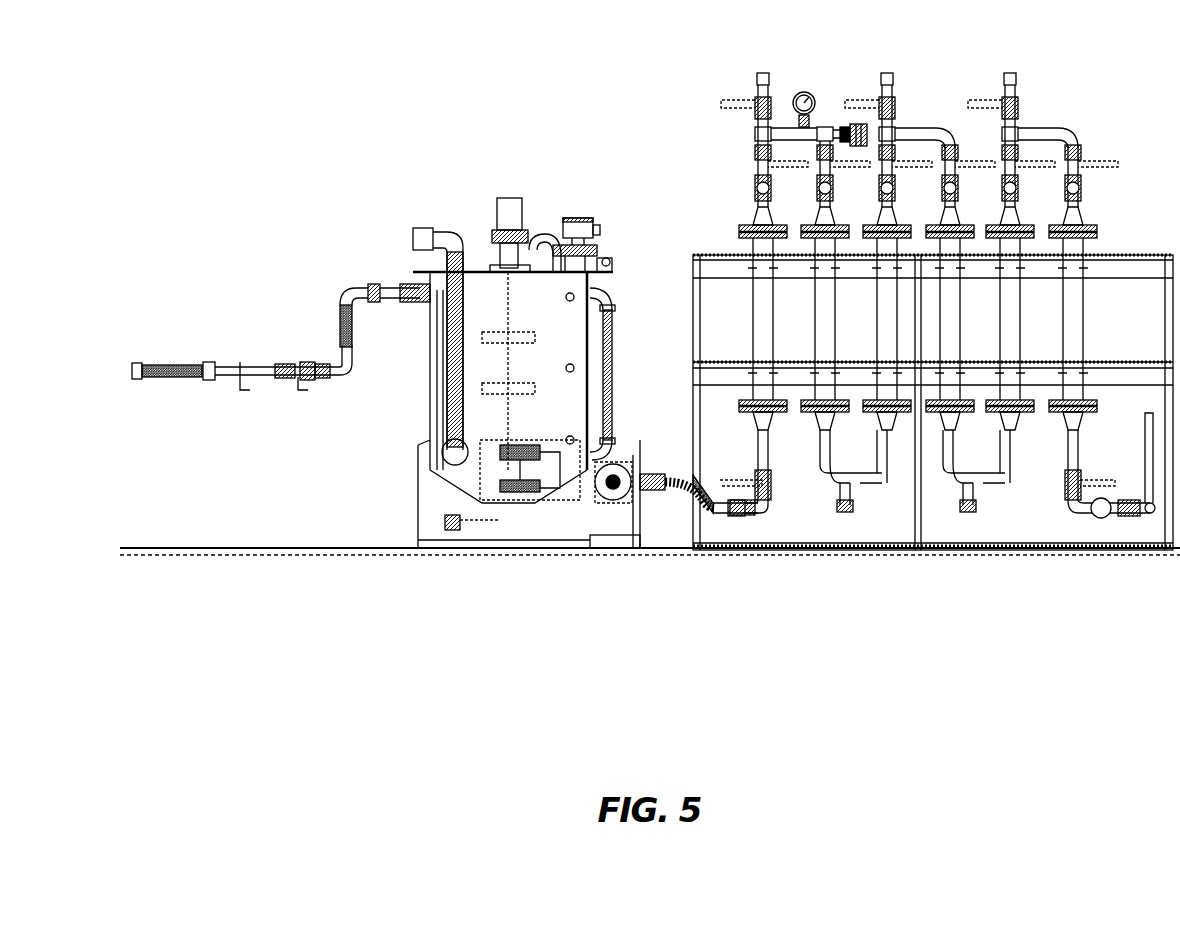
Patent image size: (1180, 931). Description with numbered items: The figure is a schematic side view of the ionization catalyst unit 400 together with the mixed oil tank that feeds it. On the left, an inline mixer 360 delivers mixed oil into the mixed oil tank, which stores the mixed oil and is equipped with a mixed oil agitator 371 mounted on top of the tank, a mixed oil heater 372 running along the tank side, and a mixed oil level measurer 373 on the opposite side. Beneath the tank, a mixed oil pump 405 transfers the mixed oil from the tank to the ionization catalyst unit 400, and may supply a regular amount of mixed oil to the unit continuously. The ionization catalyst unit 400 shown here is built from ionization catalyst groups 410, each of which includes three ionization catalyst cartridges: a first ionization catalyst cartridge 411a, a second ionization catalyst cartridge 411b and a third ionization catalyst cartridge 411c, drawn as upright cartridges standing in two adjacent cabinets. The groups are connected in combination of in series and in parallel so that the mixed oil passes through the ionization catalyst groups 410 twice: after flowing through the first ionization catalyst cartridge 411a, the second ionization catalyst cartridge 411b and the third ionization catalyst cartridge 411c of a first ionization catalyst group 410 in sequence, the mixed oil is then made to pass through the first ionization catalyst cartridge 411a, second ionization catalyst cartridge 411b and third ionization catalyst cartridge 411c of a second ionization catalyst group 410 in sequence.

The inline mixer 360 is at (170, 360).
The mixed oil agitator 371 is at (495, 222).
The mixed oil heater 372 is at (450, 362).
The mixed oil level measurer 373 is at (612, 340).
The ionization catalyst unit 400 is at (1118, 118).
The mixed oil pump 405 is at (600, 487).
The ionization catalyst group 410 is at (876, 614).
The first ionization catalyst cartridge 411a is at (963, 588).
The second ionization catalyst cartridge 411b is at (1026, 588).
The third ionization catalyst cartridge 411c is at (1092, 588).